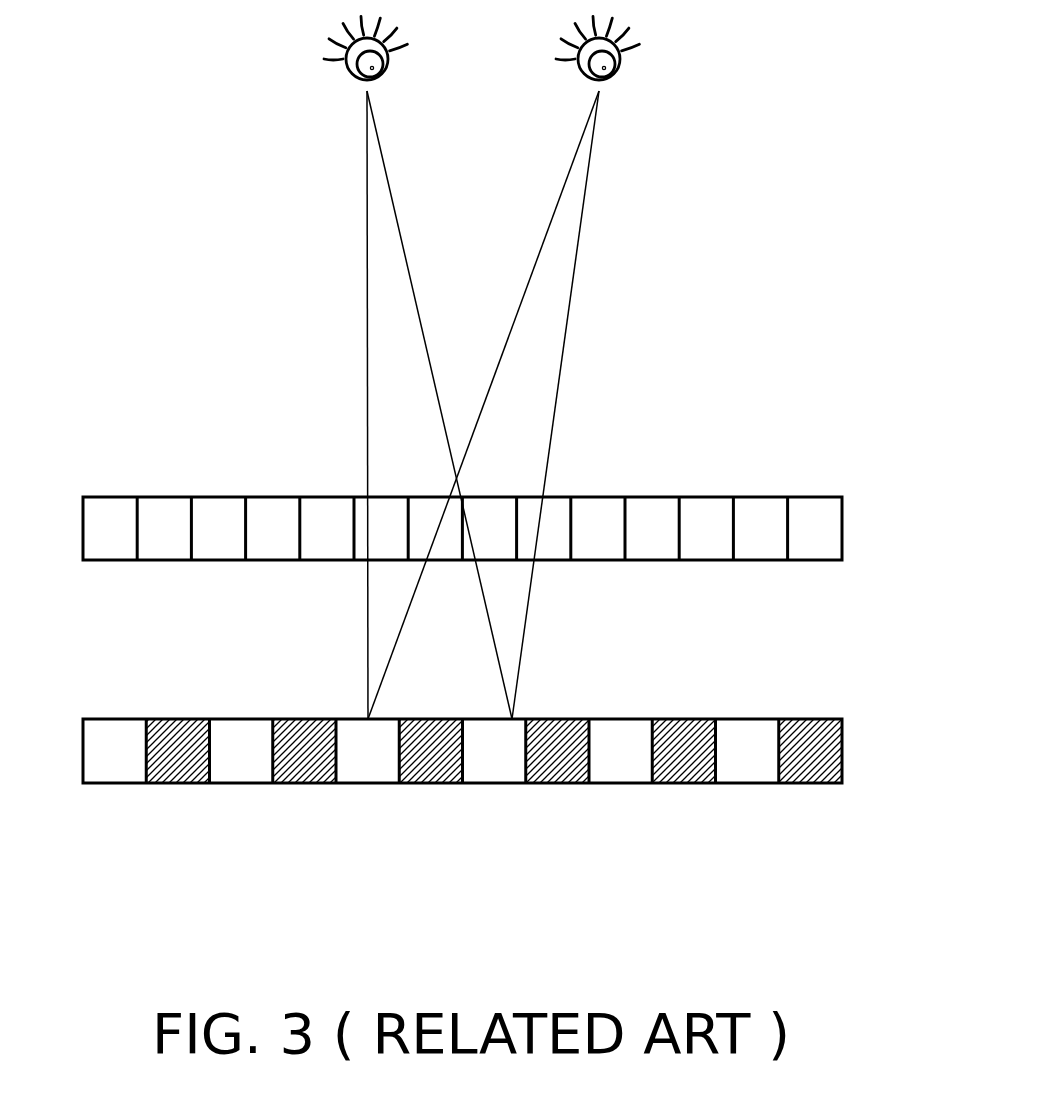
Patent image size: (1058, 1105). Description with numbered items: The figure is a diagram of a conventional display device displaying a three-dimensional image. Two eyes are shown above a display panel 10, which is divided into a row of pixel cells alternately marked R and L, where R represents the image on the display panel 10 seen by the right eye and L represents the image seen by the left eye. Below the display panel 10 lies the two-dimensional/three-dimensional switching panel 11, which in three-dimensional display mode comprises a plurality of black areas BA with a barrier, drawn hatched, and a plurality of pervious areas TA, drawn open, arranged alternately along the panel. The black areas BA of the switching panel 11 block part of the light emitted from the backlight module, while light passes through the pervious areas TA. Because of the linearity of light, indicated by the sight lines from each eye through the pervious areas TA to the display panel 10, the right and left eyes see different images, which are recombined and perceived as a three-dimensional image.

The display panel 10 is at (843, 527).
The 2-D/3-D switching panel 11 is at (843, 745).
The black areas BA is at (181, 719).
The pervious areas TA is at (122, 757).